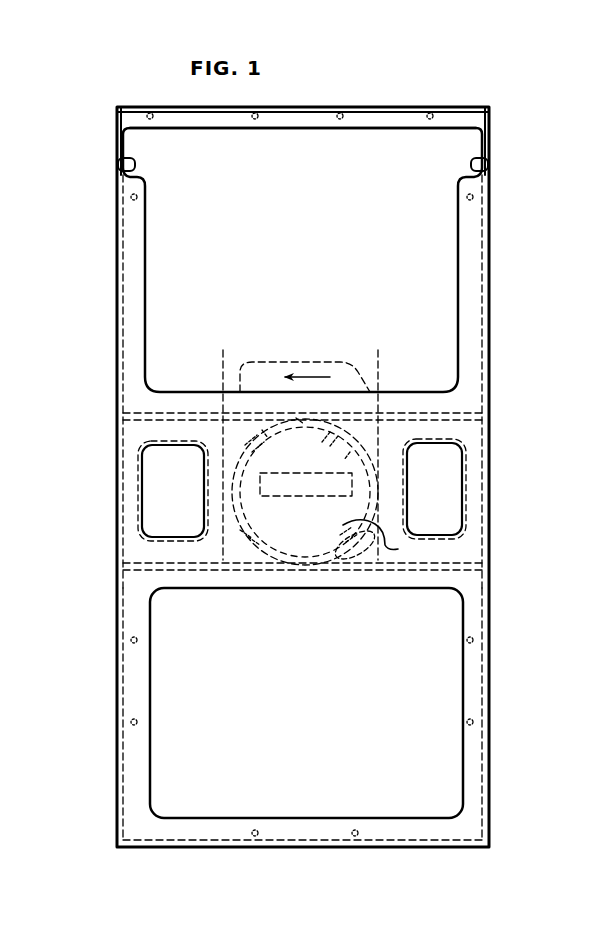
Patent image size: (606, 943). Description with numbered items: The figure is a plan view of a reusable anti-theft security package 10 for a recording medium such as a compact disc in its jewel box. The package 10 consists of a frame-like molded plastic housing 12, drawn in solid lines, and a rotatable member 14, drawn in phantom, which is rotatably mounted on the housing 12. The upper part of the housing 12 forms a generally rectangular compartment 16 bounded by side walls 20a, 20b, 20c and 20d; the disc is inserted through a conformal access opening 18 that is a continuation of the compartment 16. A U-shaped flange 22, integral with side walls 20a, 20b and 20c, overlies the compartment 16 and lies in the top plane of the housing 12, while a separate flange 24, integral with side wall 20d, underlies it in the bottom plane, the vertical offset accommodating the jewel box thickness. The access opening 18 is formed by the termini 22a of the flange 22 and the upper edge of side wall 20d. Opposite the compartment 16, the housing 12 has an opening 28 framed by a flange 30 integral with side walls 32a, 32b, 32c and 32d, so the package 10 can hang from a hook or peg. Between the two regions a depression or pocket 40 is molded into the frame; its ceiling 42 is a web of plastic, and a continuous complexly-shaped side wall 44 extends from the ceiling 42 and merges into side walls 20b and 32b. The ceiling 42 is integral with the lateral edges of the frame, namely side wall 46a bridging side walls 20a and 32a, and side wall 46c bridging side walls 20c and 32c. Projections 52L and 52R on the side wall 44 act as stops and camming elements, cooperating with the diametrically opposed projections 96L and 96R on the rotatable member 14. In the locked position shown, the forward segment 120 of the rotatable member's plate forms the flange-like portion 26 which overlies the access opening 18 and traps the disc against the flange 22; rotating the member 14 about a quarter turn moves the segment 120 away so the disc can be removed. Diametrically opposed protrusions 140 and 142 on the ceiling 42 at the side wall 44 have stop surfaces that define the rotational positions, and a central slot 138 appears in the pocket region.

The security package 10 is at (500, 427).
The housing 12 is at (490, 345).
The rotatable member 14 is at (320, 360).
The compartment 16 is at (392, 215).
The access opening 18 is at (425, 150).
The side wall 20a is at (115, 270).
The side wall 20b is at (230, 358).
The side wall 20c is at (478, 266).
The side wall 20d is at (335, 113).
The U-shaped flange 22 is at (148, 301).
The termini of the flange 22a is at (126, 166).
The flange 24 is at (270, 113).
The flange-like portion 26 is at (343, 382).
The forward segment 120 is at (359, 348).
The opening 28 is at (420, 651).
The flange 30 is at (152, 713).
The side wall 32a is at (118, 791).
The side wall 32b is at (222, 573).
The side wall 32c is at (490, 661).
The side wall 32d is at (312, 846).
The depression or pocket 40 is at (372, 433).
The ceiling 42 is at (380, 542).
The side wall 44 is at (390, 414).
The side wall 46a is at (112, 479).
The side wall 46c is at (490, 477).
The left hand projection 52L is at (243, 513).
The right hand projection 52R is at (380, 464).
The projection 96L is at (243, 471).
The projection 96R is at (380, 501).
The central slot 138 is at (306, 484).
The protrusions 140 is at (304, 412).
The protrusions 142 is at (314, 417).